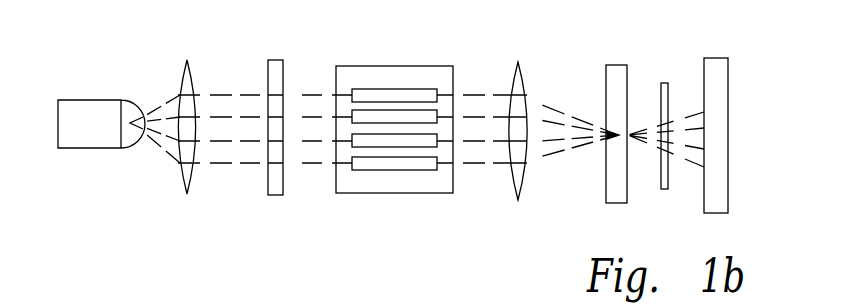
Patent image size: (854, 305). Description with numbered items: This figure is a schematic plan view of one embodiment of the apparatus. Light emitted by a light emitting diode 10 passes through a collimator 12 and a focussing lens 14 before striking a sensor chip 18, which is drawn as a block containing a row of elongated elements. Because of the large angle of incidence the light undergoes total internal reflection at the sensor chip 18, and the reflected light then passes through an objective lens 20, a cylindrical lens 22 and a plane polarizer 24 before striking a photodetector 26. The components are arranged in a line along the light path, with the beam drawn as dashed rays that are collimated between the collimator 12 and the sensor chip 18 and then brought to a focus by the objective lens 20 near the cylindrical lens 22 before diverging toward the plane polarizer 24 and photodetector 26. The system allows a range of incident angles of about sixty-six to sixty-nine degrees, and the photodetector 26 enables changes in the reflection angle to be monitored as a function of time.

The light emitting diode 10 is at (78, 118).
The collimator 12 is at (186, 62).
The focussing lens 14 is at (276, 60).
The sensor chip 18 is at (350, 72).
The objective lens 20 is at (522, 78).
The cylindrical lens 22 is at (617, 68).
The plane polarizer 24 is at (667, 88).
The photodetector 26 is at (718, 62).